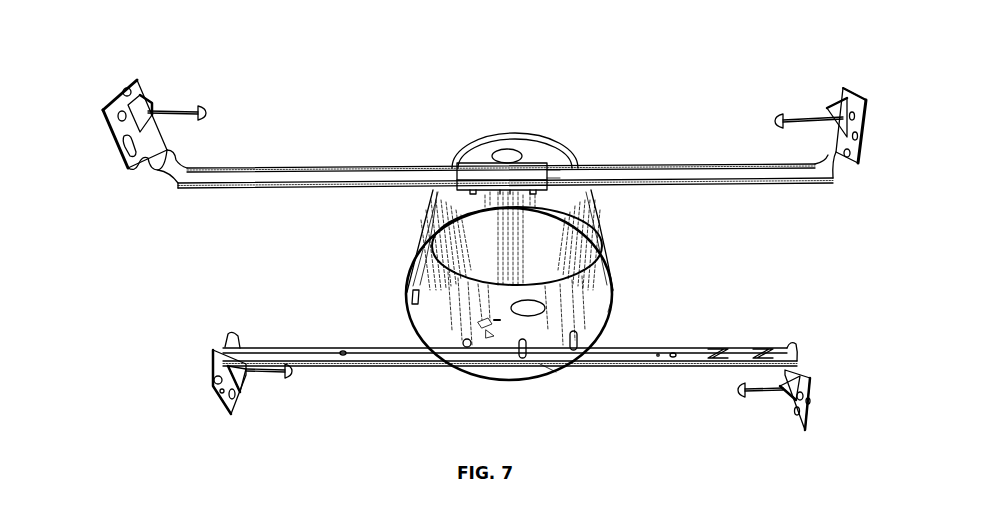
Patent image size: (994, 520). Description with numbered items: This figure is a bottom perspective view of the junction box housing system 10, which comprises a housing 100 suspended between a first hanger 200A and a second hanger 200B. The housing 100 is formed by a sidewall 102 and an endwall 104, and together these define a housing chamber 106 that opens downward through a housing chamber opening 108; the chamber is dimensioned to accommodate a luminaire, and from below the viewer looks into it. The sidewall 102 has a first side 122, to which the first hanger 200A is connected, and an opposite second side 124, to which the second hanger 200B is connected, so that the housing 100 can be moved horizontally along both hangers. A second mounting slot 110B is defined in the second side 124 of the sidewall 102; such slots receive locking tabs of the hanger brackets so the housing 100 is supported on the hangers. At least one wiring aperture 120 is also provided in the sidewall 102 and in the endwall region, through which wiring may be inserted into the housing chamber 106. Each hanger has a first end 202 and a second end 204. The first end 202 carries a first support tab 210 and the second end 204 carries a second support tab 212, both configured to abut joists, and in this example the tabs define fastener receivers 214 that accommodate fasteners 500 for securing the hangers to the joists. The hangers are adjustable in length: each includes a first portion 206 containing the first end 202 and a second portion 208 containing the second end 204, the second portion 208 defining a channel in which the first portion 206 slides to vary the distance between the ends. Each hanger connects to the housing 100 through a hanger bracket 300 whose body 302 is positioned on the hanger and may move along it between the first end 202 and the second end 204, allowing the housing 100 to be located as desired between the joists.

The junction box housing system 10 is at (715, 46).
The housing 100 is at (604, 256).
The sidewall 102 is at (608, 292).
The endwall 104 is at (560, 250).
The housing chamber 106 is at (428, 242).
The housing chamber opening 108 is at (612, 318).
The second mounting slot 110B is at (520, 358).
The wiring aperture 120 is at (518, 148).
The first side 122 is at (510, 150).
The second side 124 is at (540, 366).
The first hanger 200A is at (270, 174).
The second hanger 200B is at (758, 348).
The first end 202 is at (137, 82).
The second end 204 is at (840, 156).
The first portion 206 is at (112, 122).
The second portion 208 is at (846, 86).
The first support tab 210 is at (133, 172).
The second support tab 212 is at (838, 180).
The fastener receiver 214 is at (150, 96).
The hanger bracket 300 is at (462, 166).
The body 302 is at (549, 178).
The fastener 500 is at (208, 112).